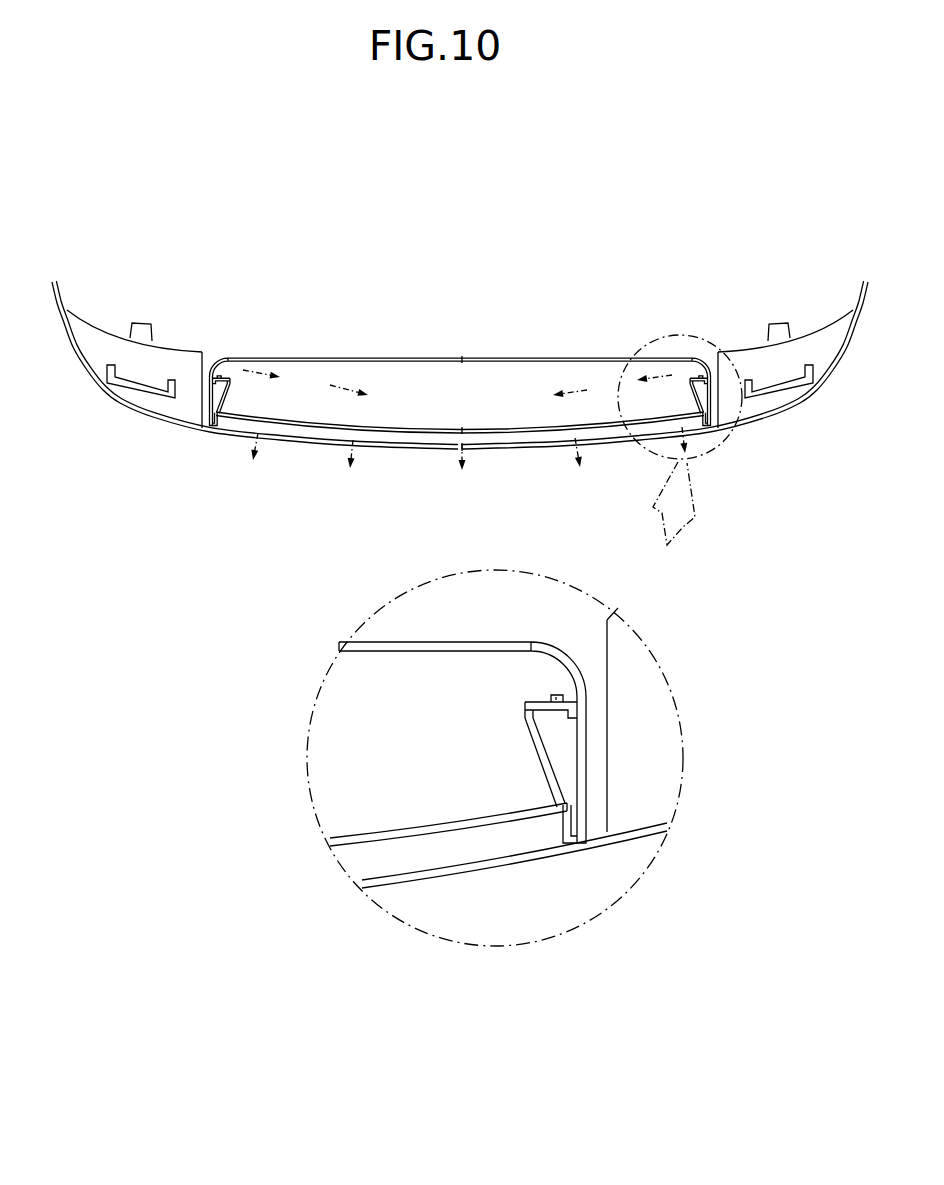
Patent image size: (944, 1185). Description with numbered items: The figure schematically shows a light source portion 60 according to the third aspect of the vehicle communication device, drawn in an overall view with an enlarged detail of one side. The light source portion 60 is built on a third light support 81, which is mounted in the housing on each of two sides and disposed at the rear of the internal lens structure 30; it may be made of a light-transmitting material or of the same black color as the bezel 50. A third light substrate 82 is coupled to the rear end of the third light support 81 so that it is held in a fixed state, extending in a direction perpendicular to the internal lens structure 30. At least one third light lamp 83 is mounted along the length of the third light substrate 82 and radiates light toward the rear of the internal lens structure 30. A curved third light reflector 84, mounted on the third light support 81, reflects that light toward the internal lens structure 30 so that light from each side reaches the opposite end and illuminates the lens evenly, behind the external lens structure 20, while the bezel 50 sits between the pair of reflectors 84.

The external lens structure 20 is at (462, 874).
The internal lens structure 30 is at (398, 834).
The bezel 50 is at (408, 647).
The light source portion 60 is at (515, 609).
The third light support 81 is at (553, 790).
The third light substrate 82 is at (563, 715).
The third light lamp 83 is at (560, 693).
The third light reflector 84 is at (572, 668).